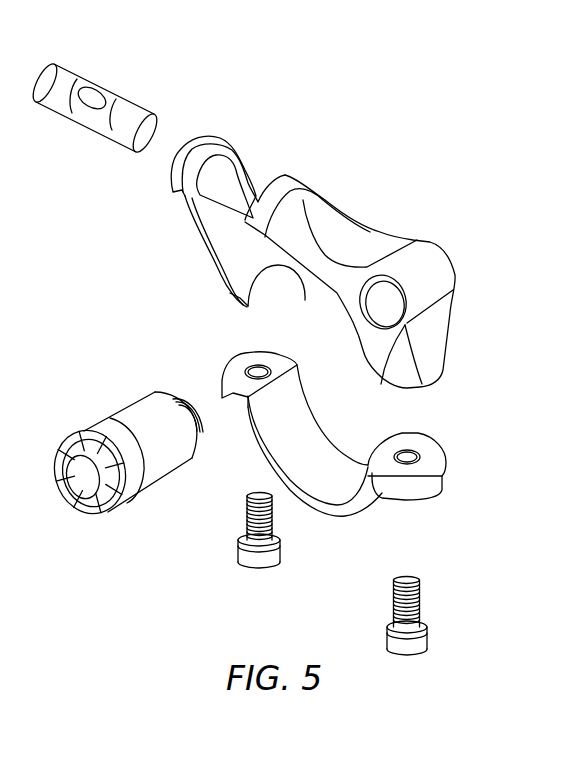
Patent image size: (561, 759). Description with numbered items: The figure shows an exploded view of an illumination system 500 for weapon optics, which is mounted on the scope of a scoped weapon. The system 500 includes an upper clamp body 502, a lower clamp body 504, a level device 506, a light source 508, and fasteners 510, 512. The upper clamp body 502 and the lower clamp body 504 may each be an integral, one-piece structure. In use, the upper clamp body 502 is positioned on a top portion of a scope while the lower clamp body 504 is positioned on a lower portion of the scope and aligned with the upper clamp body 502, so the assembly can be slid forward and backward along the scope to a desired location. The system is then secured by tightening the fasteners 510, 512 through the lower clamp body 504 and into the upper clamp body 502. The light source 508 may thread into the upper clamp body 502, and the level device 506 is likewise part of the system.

The system 500 is at (316, 90).
The upper clamp body 502 is at (448, 283).
The lower clamp body 504 is at (445, 472).
The level device 506 is at (99, 82).
The light source 508 is at (88, 514).
The fastener 510 is at (256, 568).
The fastener 512 is at (430, 645).